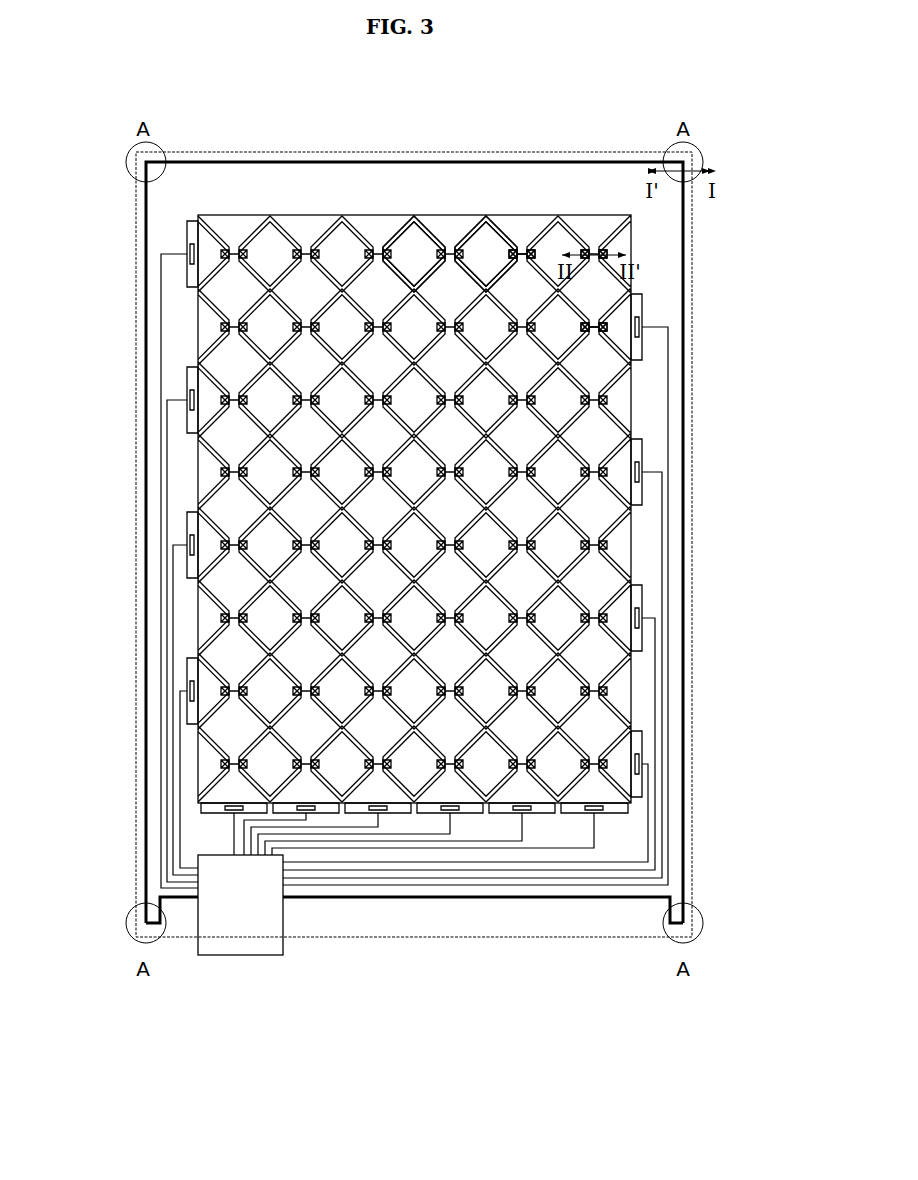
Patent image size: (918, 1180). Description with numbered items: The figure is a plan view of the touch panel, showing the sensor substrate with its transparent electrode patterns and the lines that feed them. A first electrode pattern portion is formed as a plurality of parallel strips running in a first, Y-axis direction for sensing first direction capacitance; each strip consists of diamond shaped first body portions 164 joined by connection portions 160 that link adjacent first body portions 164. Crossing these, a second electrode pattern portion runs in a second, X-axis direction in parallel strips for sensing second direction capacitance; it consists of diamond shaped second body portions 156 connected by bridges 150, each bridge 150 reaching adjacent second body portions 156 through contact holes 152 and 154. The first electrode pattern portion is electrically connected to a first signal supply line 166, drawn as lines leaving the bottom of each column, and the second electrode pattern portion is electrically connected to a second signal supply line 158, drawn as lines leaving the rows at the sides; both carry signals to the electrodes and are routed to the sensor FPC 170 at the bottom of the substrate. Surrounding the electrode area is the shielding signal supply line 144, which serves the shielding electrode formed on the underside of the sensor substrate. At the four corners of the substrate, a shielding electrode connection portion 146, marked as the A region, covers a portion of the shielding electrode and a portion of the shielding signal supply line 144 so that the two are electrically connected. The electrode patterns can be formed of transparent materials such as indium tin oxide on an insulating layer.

The shielding signal supply line 144 is at (146, 562).
The shielding electrode connection portion 146 is at (697, 150).
The bridge 150 is at (604, 327).
The contact hole 152 is at (604, 252).
The contact hole 154 is at (579, 248).
The second body portion 156 is at (413, 253).
The second signal supply line 158 is at (161, 298).
The connection portion 160 is at (523, 252).
The first body portion 164 is at (513, 283).
The first signal supply line 166 is at (237, 833).
The sensor FPC 170 is at (242, 955).